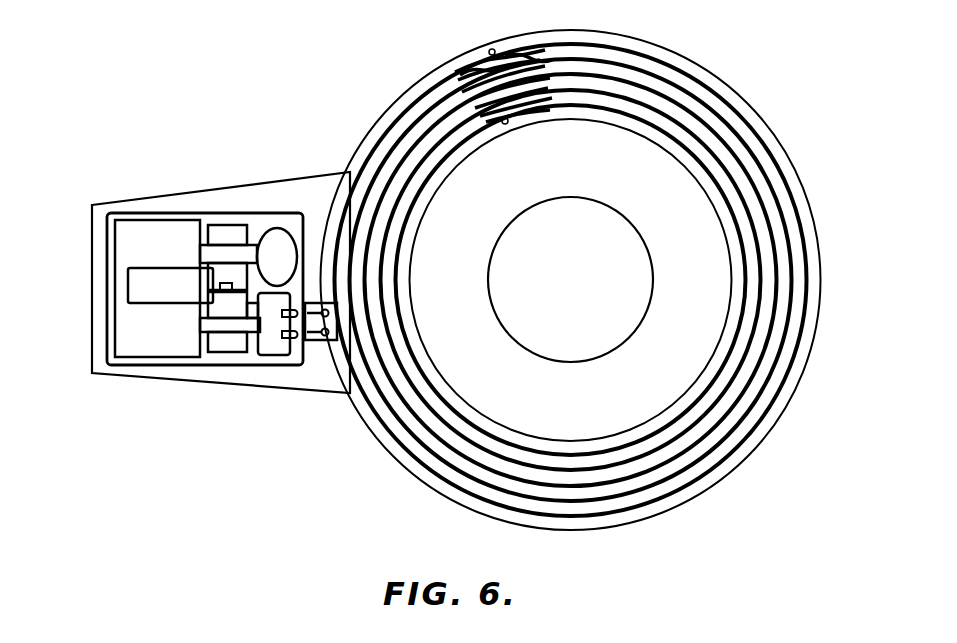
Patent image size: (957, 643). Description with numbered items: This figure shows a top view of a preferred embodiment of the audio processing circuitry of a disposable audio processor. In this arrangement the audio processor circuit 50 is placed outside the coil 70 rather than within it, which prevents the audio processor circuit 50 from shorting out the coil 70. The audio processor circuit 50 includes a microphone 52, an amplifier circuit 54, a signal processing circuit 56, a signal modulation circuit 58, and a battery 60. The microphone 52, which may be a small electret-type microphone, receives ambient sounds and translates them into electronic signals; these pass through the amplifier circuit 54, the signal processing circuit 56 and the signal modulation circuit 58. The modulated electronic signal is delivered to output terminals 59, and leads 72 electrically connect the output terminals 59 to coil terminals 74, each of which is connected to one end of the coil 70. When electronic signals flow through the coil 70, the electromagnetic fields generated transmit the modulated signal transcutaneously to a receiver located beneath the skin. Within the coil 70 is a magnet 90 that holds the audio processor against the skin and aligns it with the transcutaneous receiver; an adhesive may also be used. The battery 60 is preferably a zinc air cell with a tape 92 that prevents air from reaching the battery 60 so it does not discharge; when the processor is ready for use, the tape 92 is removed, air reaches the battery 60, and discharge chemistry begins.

The audio processor circuit 50 is at (266, 200).
The microphone 52 is at (283, 245).
The amplifier circuit 54 is at (233, 228).
The signal processing circuit 56 is at (220, 345).
The signal modulation circuit 58 is at (267, 345).
The output terminals 59 is at (300, 340).
The battery 60 is at (187, 353).
The coil 70 is at (775, 155).
The leads 72 is at (305, 345).
The coil terminals 74 is at (313, 342).
The magnet 90 is at (608, 225).
The tape 92 is at (140, 285).